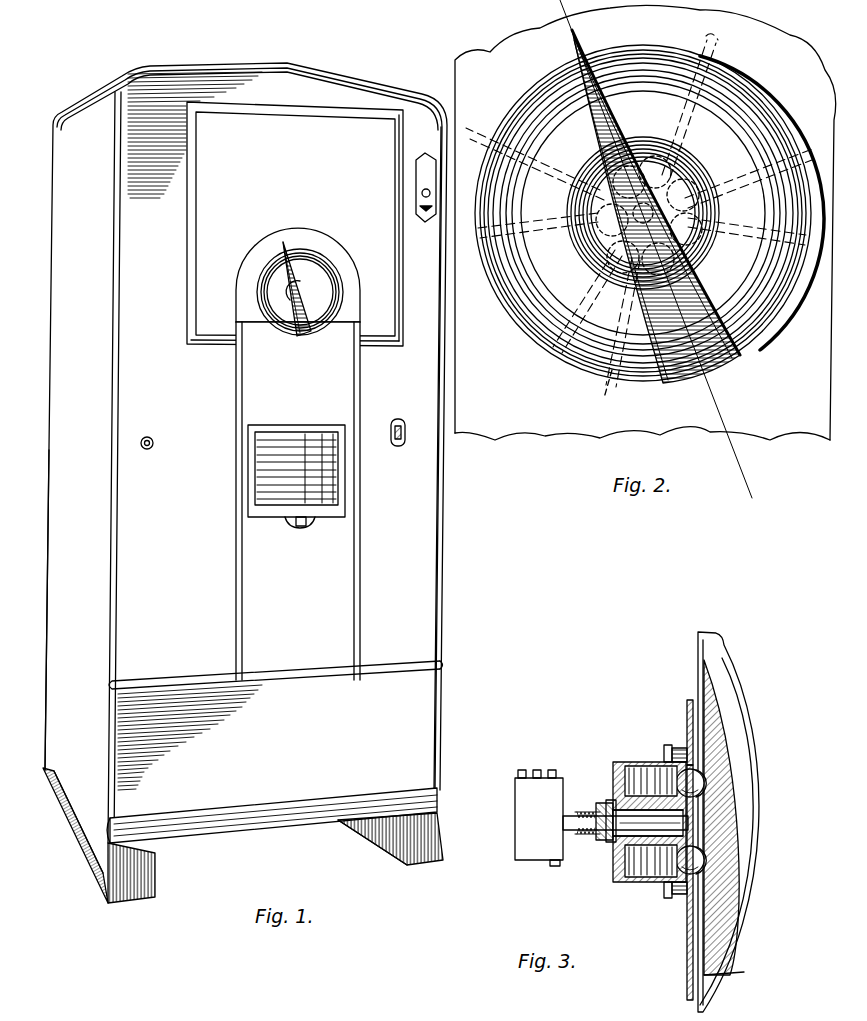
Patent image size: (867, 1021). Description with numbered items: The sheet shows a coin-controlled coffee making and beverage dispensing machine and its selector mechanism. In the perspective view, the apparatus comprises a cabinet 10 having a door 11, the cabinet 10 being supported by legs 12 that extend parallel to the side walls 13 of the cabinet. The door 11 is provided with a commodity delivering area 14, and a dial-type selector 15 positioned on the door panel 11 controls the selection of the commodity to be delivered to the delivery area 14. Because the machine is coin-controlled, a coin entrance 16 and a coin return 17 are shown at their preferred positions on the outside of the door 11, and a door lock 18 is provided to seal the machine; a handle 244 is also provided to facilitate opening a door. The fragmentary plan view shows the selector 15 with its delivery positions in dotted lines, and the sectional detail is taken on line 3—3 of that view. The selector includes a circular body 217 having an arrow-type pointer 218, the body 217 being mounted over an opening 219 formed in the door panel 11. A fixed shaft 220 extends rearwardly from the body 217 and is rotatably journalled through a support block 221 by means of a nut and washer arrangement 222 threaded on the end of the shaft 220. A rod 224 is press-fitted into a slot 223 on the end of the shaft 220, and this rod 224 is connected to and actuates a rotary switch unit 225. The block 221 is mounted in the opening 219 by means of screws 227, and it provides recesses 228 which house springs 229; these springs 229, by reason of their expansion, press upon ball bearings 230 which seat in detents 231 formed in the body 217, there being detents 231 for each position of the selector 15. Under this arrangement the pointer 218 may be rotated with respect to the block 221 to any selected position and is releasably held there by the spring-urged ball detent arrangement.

In FIG. 1, the cabinet 10 is at (445, 522).
In FIG. 1, the door 11 is at (207, 408).
In FIG. 2, the door 11 is at (573, 432).
In FIG. 3, the door 11 is at (680, 948).
In FIG. 1, the legs 12 is at (160, 878).
In FIG. 1, the side walls 13 is at (89, 408).
In FIG. 1, the commodity delivering area 14 is at (280, 510).
In FIG. 1, the dial-type selector 15 is at (320, 250).
In FIG. 2, the dial-type selector 15 is at (649, 210).
In FIG. 1, the coin entrance 16 is at (426, 189).
In FIG. 1, the coin return 17 is at (404, 446).
In FIG. 1, the door lock 18 is at (150, 450).
In FIG. 1, the handle 244 is at (305, 522).
In FIG. 2, the circular body 217 is at (705, 78).
In FIG. 3, the circular body 217 is at (722, 748).
In FIG. 2, the arrow type pointer 218 is at (617, 113).
In FIG. 3, the opening 219 is at (691, 735).
In FIG. 3, the fixed shaft 220 is at (612, 828).
In FIG. 3, the support block 221 is at (620, 775).
In FIG. 3, the nut and washer arrangement 222 is at (606, 800).
In FIG. 3, the slot 223 is at (585, 836).
In FIG. 3, the rod 224 is at (598, 808).
In FIG. 3, the rotary switch unit 225 is at (554, 833).
In FIG. 3, the screws 227 is at (682, 755).
In FIG. 3, the recesses 228 is at (661, 777).
In FIG. 3, the springs 229 is at (642, 790).
In FIG. 2, the ball bearings 230 is at (602, 395).
In FIG. 3, the ball bearings 230 is at (698, 780).
In FIG. 3, the detents 231 is at (720, 800).
In FIG. 2, the section line 3- 3 is at (568, 18).